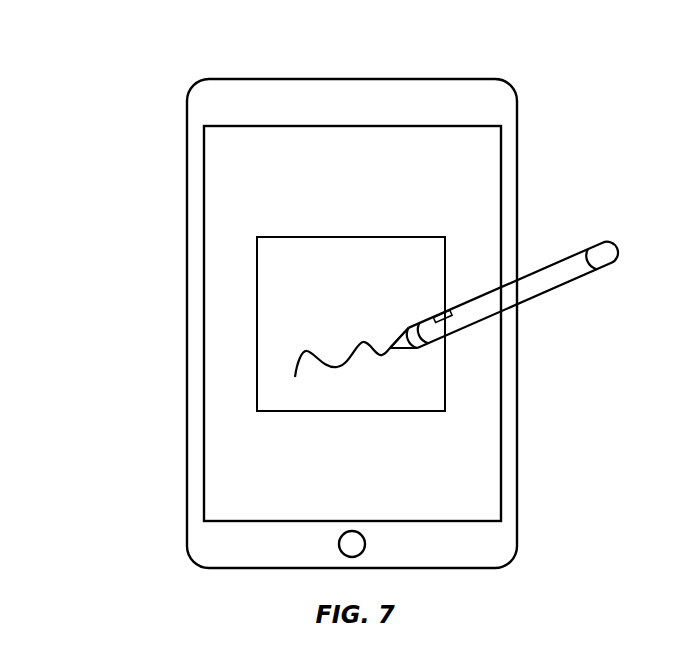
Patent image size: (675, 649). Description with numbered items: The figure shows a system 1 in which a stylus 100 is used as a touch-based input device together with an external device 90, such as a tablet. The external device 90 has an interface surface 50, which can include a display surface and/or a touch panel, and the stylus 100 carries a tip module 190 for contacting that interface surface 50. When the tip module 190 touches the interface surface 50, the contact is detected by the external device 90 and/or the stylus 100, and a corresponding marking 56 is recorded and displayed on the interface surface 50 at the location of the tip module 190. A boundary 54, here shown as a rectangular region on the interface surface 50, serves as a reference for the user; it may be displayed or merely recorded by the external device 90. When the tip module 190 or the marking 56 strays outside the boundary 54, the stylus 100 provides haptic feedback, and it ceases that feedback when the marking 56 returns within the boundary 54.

The system 1 is at (58, 117).
The external device 90 is at (258, 79).
The interface surface 50 is at (413, 126).
The boundary 54 is at (345, 237).
The marking 56 is at (320, 353).
The stylus 100 is at (562, 242).
The tip module 190 is at (398, 338).